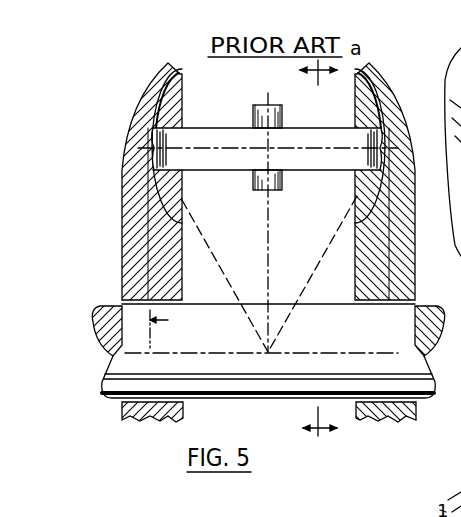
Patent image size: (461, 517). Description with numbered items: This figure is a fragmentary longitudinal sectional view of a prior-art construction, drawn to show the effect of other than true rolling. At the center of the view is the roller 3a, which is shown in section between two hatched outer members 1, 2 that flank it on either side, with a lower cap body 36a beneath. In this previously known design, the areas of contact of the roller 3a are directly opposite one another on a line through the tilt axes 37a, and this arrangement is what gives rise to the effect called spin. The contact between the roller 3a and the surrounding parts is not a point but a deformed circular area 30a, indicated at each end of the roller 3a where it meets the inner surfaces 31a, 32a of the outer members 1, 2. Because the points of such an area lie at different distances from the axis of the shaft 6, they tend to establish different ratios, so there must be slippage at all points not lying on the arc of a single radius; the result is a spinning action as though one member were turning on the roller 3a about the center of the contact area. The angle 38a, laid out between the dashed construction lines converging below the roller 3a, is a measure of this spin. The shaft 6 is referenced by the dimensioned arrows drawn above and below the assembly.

The first socket arm 1 is at (169, 69).
The second socket arm 2 is at (368, 71).
The roller 3a is at (223, 171).
The shaft 6 is at (327, 101).
The circular area 30a is at (153, 148).
The inner surface of first arm 31a is at (174, 79).
The inner surface of second arm 32a is at (376, 97).
The cap body 36a is at (270, 352).
The tilt axes 37a is at (269, 150).
The angle 38a is at (237, 297).